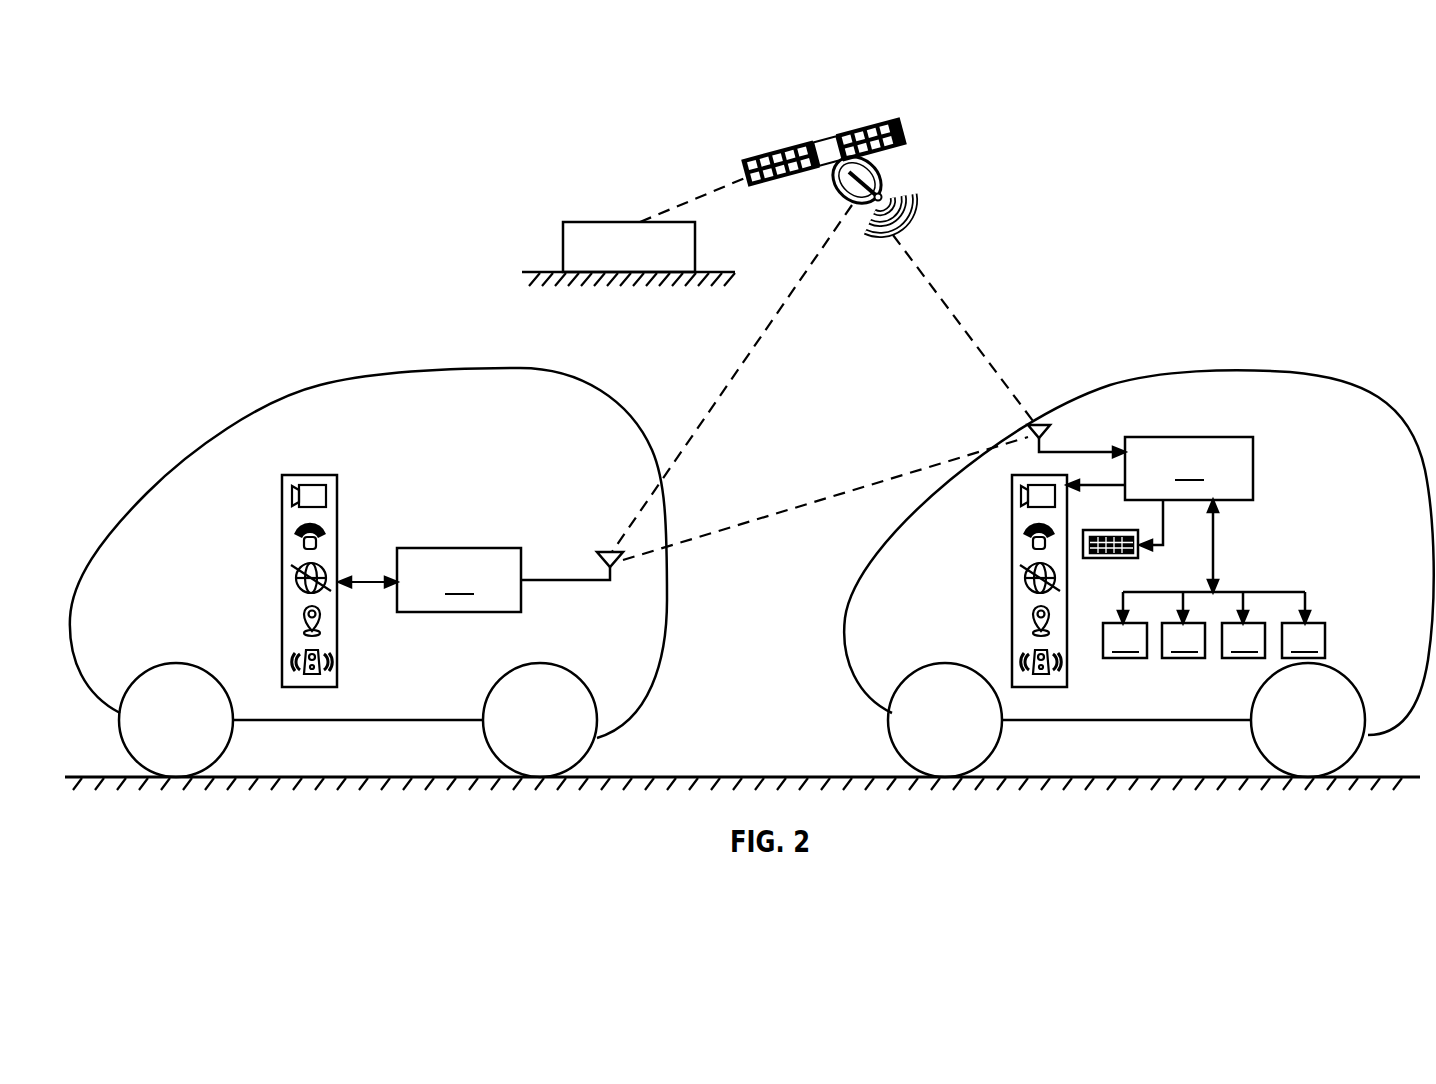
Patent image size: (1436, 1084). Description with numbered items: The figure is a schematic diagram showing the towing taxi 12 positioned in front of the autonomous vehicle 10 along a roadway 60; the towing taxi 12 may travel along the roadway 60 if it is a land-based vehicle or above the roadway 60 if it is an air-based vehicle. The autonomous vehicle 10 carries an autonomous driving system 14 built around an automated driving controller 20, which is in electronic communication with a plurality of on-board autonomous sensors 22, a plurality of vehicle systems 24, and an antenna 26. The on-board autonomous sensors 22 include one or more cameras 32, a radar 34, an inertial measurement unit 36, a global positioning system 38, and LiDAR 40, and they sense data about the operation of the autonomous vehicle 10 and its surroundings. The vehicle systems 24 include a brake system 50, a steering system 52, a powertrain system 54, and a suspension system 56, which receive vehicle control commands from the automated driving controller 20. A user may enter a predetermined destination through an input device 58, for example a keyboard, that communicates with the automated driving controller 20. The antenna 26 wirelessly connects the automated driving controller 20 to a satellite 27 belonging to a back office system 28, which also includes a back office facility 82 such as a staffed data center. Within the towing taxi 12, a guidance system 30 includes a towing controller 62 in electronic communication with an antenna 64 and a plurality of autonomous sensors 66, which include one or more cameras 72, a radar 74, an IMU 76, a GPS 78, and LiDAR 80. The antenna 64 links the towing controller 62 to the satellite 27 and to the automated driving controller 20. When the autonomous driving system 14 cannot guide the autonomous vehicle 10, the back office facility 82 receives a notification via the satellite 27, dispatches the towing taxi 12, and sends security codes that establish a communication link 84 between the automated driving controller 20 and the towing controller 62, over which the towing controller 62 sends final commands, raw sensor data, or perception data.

The autonomous vehicle 10 is at (1312, 375).
The towing taxi 12 is at (608, 395).
The autonomous driving system 14 is at (1235, 416).
The automated driving controller 20 is at (1189, 468).
The plurality of on-board autonomous sensors 22 is at (1012, 516).
The plurality of vehicle systems 24 is at (1274, 565).
The antenna 26 is at (1043, 418).
The satellite 27 is at (826, 136).
The back office system 28 is at (868, 153).
The guidance system 30 is at (408, 443).
The cameras 32 is at (1022, 496).
The radar 34 is at (1032, 548).
The inertial measurement unit 36 is at (1024, 575).
The global positioning system 38 is at (1030, 619).
The LiDAR 40 is at (1060, 665).
The brake system 50 is at (1125, 639).
The steering system 52 is at (1183, 639).
The powertrain system 54 is at (1243, 639).
The suspension system 56 is at (1303, 639).
The input device 58 is at (1103, 558).
The roadway 60 is at (722, 777).
The towing controller 62 is at (459, 580).
The antenna 64 is at (608, 551).
The plurality of autonomous sensors 66 is at (282, 590).
The cameras 72 is at (327, 497).
The radar 74 is at (318, 547).
The IMU 76 is at (329, 582).
The GPS 78 is at (320, 619).
The LiDAR 80 is at (330, 666).
The back office facility 82 is at (618, 221).
The communication link 84 is at (798, 500).